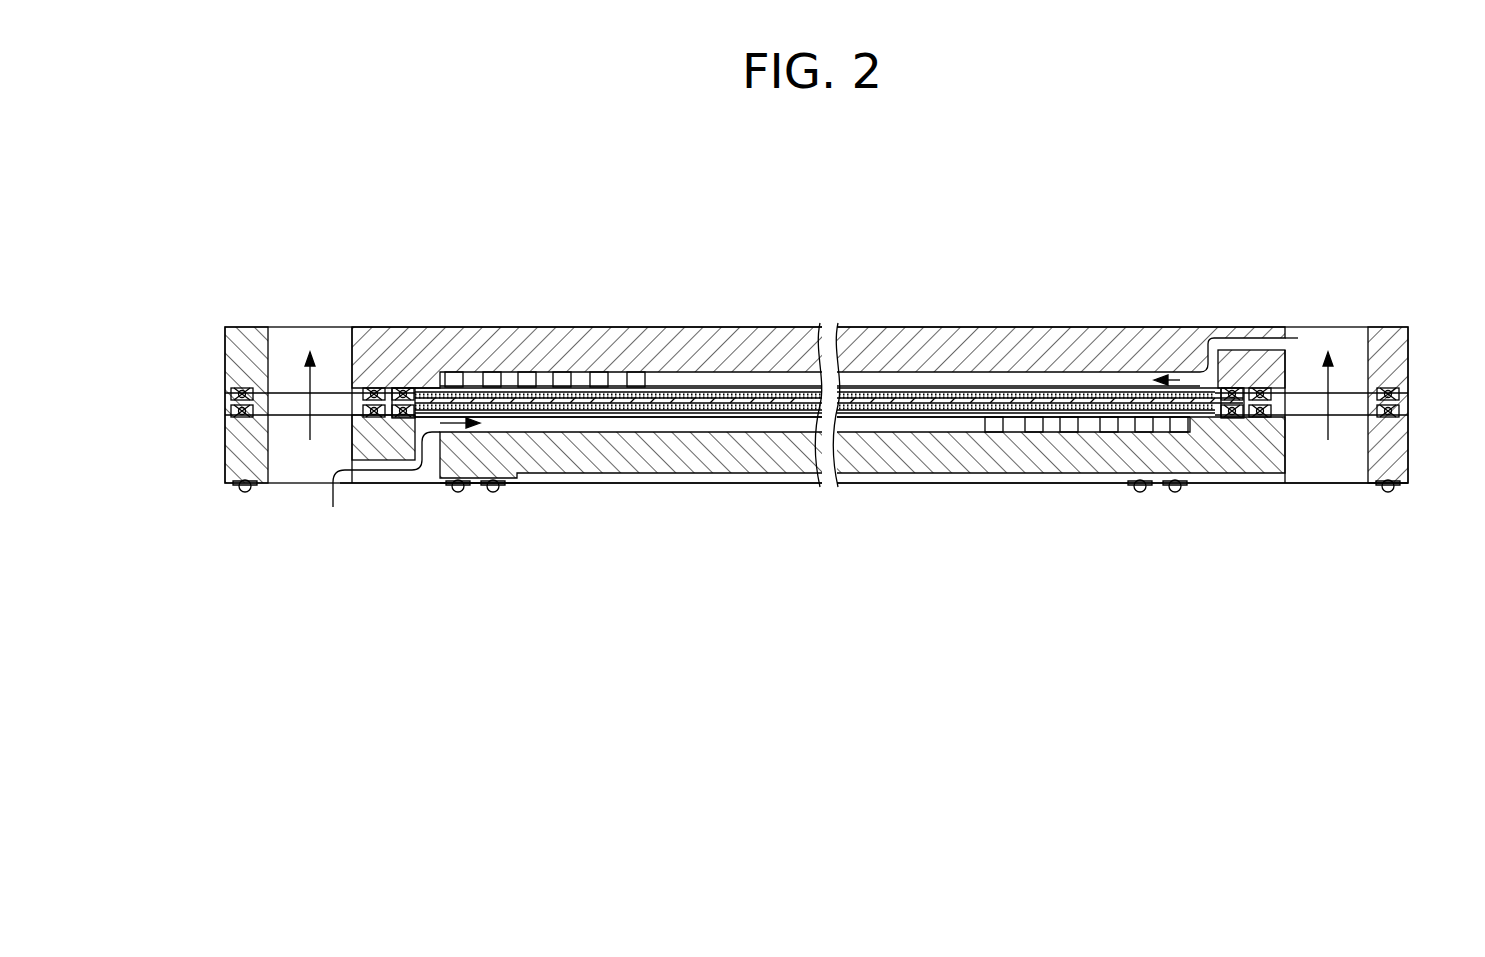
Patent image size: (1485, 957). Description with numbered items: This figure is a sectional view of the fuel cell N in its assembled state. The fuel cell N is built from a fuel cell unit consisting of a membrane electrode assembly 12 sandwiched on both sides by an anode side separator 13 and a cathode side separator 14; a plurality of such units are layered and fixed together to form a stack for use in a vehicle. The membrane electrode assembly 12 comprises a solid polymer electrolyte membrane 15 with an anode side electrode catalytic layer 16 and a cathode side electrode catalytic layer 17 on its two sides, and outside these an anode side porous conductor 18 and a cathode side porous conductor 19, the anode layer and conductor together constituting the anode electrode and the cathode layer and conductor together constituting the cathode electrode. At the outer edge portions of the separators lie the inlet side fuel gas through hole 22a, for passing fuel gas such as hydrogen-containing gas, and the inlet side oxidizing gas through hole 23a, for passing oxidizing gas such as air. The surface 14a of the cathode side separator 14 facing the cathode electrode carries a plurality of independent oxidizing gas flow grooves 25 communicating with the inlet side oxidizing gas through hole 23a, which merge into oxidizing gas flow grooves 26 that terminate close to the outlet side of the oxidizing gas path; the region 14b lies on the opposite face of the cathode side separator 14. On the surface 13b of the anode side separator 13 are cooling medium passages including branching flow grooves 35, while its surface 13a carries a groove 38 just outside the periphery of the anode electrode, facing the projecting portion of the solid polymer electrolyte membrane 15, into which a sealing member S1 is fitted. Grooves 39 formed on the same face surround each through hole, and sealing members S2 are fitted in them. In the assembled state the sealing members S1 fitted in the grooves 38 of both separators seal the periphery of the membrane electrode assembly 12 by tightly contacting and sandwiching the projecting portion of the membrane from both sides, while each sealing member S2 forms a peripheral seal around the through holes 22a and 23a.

The membrane electrode assembly 12 is at (811, 287).
The anode side separator 13 is at (870, 512).
The surface of the anode side separator 13a is at (950, 426).
The surface of the anode side separator 13b is at (450, 490).
The cathode side separator 14 is at (825, 373).
The surface of the cathode side separator 14a is at (657, 414).
The upper body channel 14b is at (910, 326).
The solid polymer electrolyte membrane 15 is at (600, 326).
The anode side electrode catalytic layer 16 is at (829, 312).
The cathode side electrode catalytic layer 17 is at (800, 306).
The anode side porous conductor 18 is at (690, 203).
The cathode side porous conductor 19 is at (463, 326).
The inlet side fuel gas through hole 22a is at (290, 345).
The inlet side oxidizing gas through hole 23a is at (1307, 483).
The oxidizing gas flow grooves 25 is at (728, 385).
The oxidizing gas flow grooves 26 is at (722, 420).
The branching flow grooves 35 is at (862, 485).
The groove 38 is at (404, 420).
The grooves 39 is at (226, 392).
The sealing member S1 is at (376, 388).
The sealing members S2 is at (227, 414).
The fuel cell N is at (842, 191).